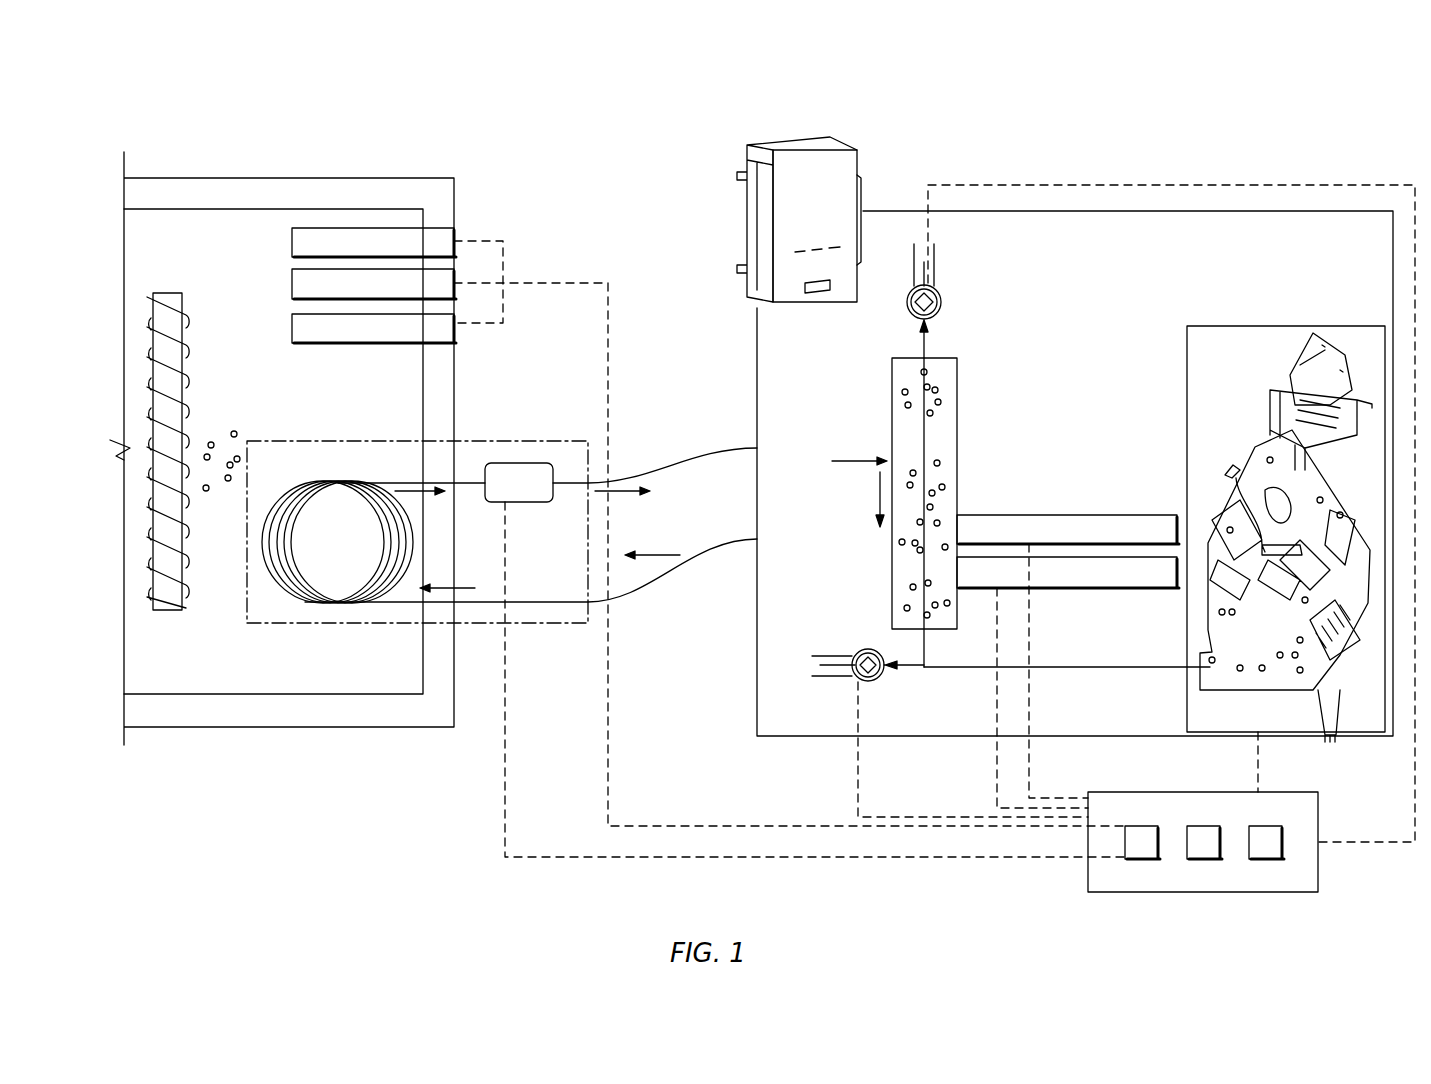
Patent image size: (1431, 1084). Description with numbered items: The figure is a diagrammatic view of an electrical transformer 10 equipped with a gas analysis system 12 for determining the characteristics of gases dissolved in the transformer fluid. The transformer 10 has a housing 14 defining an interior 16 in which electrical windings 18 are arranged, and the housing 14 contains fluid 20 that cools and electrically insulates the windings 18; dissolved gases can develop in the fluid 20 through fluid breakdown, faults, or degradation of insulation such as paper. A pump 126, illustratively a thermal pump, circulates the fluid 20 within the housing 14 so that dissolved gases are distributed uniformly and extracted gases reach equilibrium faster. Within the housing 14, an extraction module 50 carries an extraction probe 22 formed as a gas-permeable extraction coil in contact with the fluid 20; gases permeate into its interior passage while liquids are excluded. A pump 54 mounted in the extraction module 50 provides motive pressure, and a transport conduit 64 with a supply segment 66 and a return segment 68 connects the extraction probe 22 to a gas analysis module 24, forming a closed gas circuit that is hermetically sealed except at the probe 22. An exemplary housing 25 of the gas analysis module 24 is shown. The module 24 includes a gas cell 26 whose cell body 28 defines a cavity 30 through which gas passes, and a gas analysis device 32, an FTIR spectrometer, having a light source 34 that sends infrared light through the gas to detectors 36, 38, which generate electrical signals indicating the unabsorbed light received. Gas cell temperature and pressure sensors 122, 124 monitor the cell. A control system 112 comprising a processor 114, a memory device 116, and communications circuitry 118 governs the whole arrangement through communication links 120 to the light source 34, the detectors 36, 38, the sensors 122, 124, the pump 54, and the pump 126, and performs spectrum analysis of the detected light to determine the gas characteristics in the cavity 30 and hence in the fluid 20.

The electrical transformer 10 is at (200, 90).
The gas analysis system 12 is at (598, 130).
The housing 14 is at (340, 177).
The interior 16 is at (258, 254).
The electrical windings 18 is at (190, 331).
The fluid 20 is at (254, 406).
The extraction probe 22 is at (300, 604).
The gas analysis module 24 is at (962, 132).
The housing 25 is at (860, 165).
The gas cell 26 is at (1012, 394).
The cell body 28 is at (958, 443).
The cavity 30 is at (891, 378).
The gas analysis device 32 is at (1147, 306).
The light source 34 is at (1243, 325).
The detector 36 is at (942, 295).
The detector 38 is at (859, 650).
The extraction module 50 is at (397, 630).
The pump 54 is at (528, 504).
The transport conduit 64 is at (648, 594).
The supply segment 66 is at (711, 452).
The return segment 68 is at (705, 541).
The control system 112 is at (1132, 893).
The processor 114 is at (1132, 826).
The memory device 116 is at (1196, 826).
The communications circuitry 118 is at (1268, 826).
The communication links 120 is at (560, 853).
The gas cell temperature sensor 122 is at (1105, 515).
The gas cell pressure sensor 124 is at (1105, 589).
The pump 126 is at (375, 254).